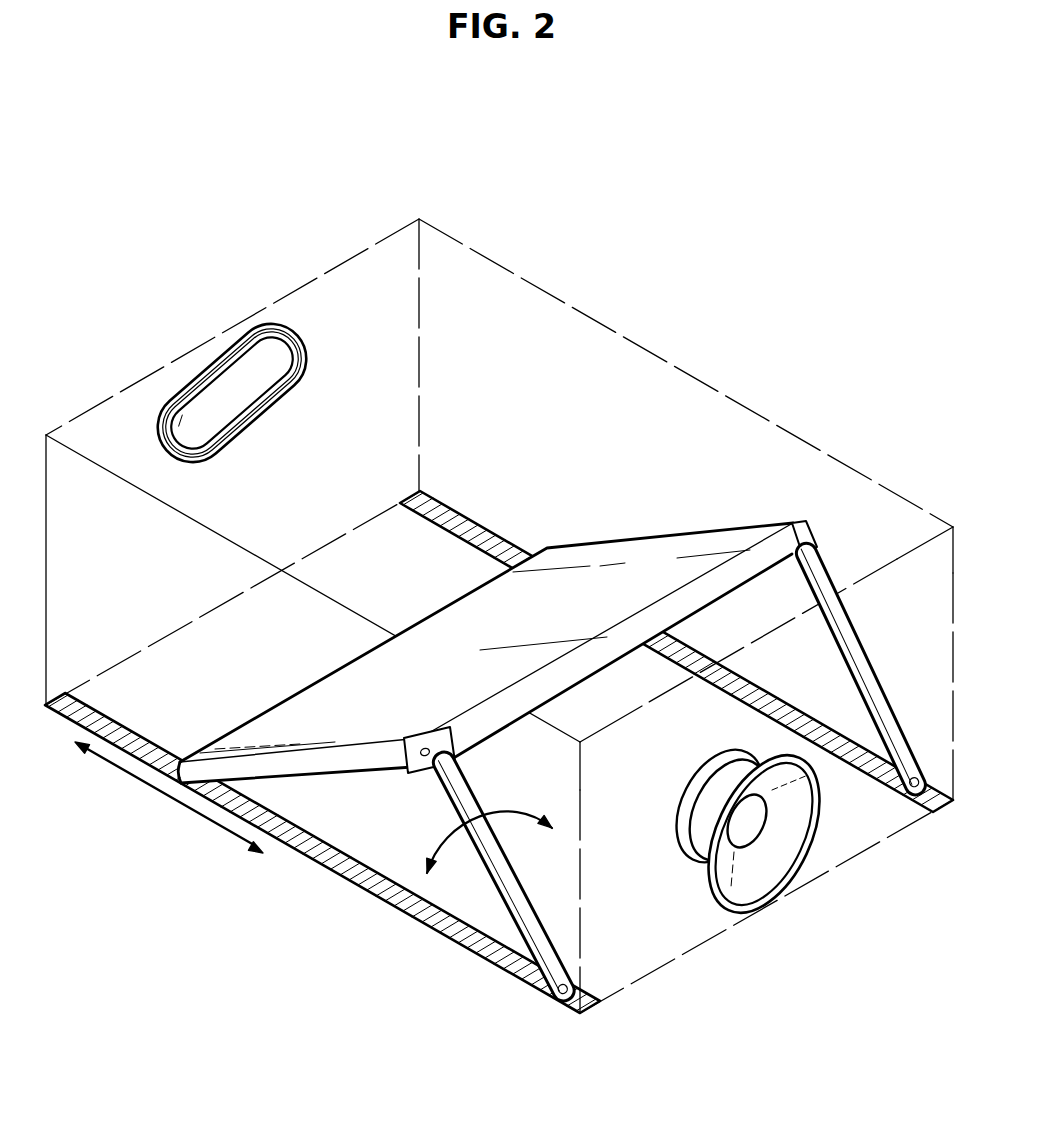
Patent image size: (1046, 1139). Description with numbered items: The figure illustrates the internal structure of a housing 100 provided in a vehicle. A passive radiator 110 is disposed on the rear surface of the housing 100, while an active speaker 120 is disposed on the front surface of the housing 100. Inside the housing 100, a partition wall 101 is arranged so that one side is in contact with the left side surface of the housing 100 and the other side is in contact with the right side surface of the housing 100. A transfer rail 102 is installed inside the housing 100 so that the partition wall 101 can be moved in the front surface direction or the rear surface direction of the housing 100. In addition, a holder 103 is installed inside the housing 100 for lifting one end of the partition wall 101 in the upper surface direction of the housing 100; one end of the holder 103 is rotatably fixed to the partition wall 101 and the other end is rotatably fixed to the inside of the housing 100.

The housing 100 is at (647, 350).
The partition wall 101 is at (307, 767).
The transfer rail 102 is at (367, 892).
The holder 103 is at (513, 902).
The passive radiator 110 is at (235, 388).
The active speaker 120 is at (778, 858).